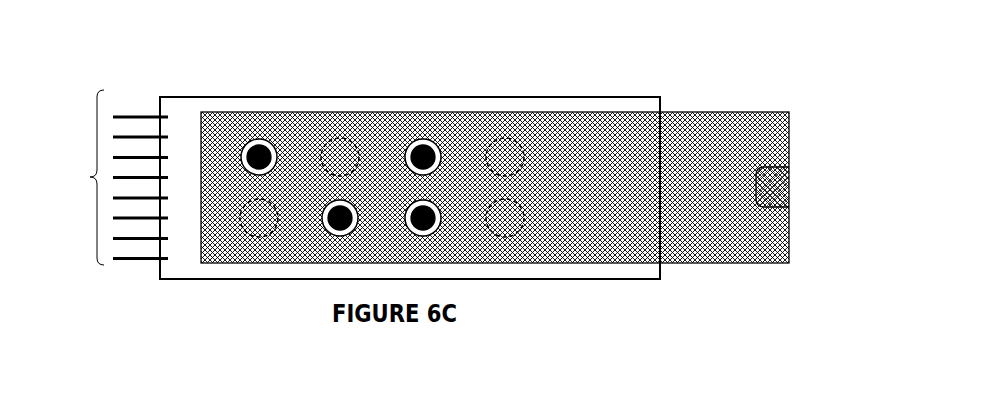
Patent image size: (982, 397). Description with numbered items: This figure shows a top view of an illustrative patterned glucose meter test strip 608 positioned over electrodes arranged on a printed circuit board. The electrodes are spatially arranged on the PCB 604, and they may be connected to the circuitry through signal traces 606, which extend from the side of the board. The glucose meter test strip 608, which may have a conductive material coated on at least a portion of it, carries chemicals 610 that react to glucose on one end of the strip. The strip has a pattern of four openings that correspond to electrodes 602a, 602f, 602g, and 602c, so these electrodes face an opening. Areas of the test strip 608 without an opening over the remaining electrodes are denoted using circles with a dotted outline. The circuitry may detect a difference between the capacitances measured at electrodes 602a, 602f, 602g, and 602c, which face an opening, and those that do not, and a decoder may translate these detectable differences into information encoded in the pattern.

The electrode 602a is at (244, 143).
The electrode 602c is at (411, 147).
The electrode 602f is at (328, 203).
The electrode 602g is at (411, 208).
The PCB 604 is at (608, 281).
The signal traces 606 is at (98, 177).
The glucose meter test strip 608 is at (681, 111).
The chemicals 610 is at (779, 182).